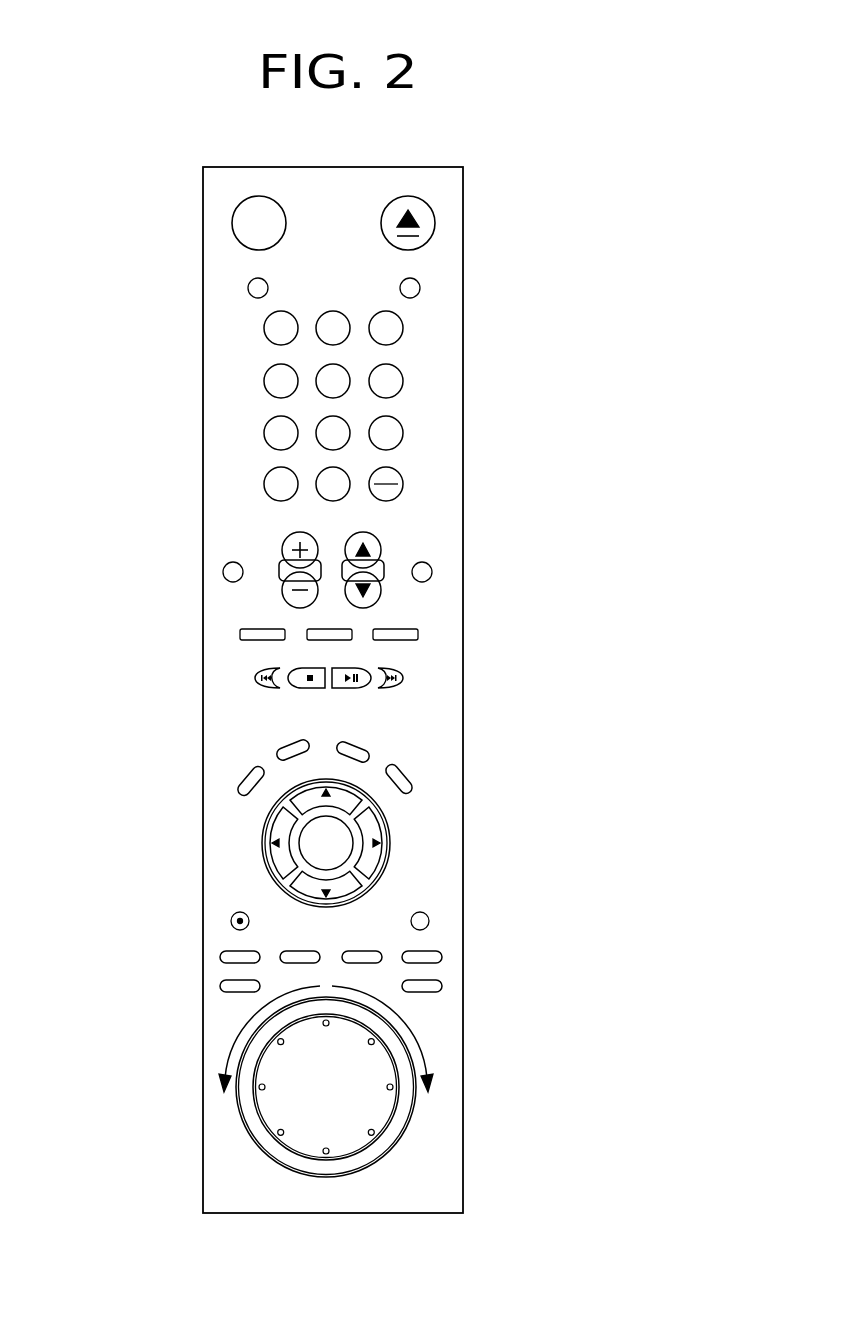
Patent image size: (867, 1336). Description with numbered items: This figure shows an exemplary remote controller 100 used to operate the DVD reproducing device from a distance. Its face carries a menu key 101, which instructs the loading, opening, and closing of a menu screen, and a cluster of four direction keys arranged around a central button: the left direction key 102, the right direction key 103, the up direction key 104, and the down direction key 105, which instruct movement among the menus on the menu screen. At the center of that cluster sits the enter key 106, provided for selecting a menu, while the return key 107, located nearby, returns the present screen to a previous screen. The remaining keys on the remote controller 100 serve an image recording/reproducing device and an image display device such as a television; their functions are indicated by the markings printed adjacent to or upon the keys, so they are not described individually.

The remote controller 100 is at (171, 168).
The menu key 101 is at (279, 754).
The left direction key 102 is at (266, 827).
The right direction key 103 is at (382, 830).
The up direction key 104 is at (352, 797).
The down direction key 105 is at (301, 892).
The enter key 106 is at (346, 849).
The return key 107 is at (427, 917).